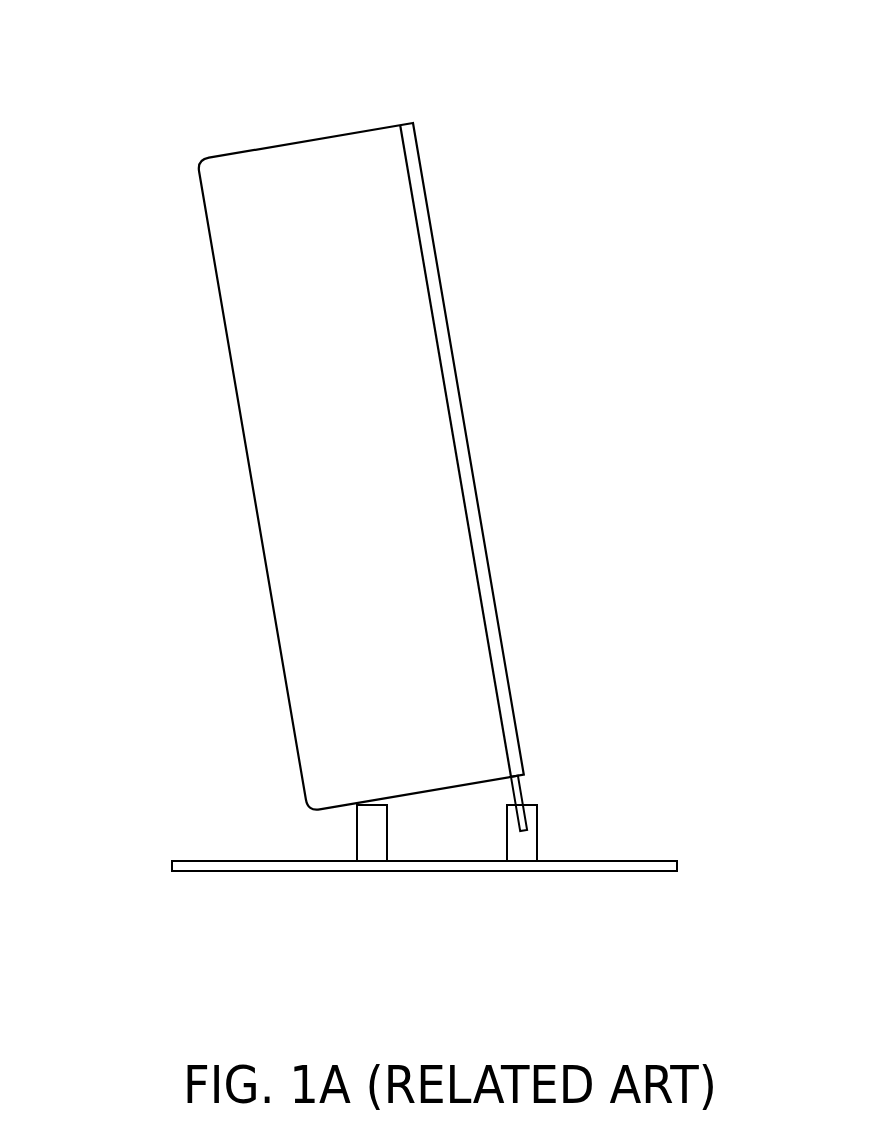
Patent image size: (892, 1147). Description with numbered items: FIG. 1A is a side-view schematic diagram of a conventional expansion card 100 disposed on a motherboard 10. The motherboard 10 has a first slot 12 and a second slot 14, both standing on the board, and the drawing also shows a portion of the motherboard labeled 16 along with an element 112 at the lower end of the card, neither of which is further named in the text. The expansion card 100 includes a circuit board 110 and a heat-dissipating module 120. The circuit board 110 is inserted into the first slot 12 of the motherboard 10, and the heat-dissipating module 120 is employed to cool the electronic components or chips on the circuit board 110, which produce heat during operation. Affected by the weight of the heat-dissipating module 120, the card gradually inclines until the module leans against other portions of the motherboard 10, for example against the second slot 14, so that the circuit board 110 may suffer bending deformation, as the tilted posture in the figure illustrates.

The expansion card 100 is at (222, 87).
The circuit board 110 is at (423, 222).
The connector pin 112 is at (472, 784).
The heat-dissipating module 120 is at (215, 203).
The motherboard 10 is at (672, 867).
The first slot 12 is at (532, 838).
The second slot 14 is at (367, 855).
The top surface of base plate 16 is at (637, 860).